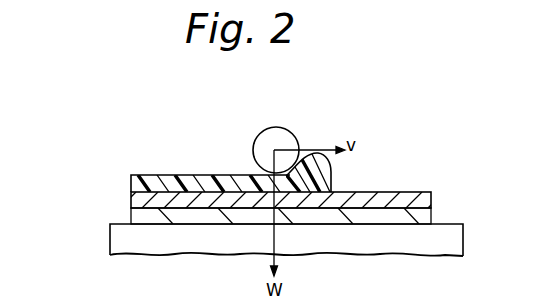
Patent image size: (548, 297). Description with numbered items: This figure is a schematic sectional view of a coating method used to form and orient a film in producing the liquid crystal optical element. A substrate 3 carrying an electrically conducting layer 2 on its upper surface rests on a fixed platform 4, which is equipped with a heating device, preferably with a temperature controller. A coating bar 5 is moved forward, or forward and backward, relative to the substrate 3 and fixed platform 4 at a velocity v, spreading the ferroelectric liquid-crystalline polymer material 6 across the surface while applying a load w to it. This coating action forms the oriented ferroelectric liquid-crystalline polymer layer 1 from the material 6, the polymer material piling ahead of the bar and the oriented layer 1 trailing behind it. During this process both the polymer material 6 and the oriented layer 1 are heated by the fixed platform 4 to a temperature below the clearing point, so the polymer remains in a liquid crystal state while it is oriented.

The oriented ferroelectric liquid-crystalline polymer layer 1 is at (131, 182).
The electrically conducting layer 2 is at (431, 193).
The substrate 3 is at (131, 213).
The fixed platform 4 is at (110, 237).
The coating bar 5 is at (290, 128).
The ferroelectric liquid-crystalline polymer material 6 is at (331, 172).